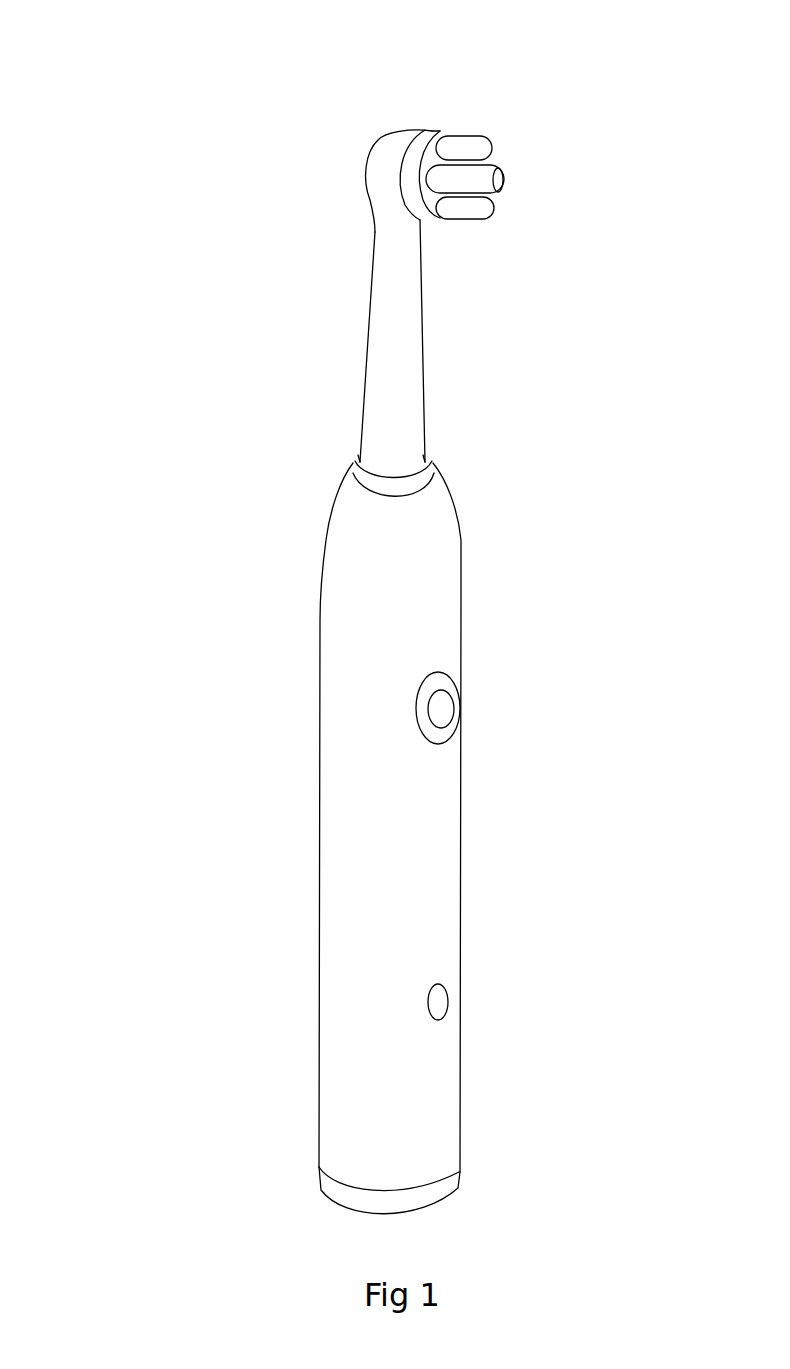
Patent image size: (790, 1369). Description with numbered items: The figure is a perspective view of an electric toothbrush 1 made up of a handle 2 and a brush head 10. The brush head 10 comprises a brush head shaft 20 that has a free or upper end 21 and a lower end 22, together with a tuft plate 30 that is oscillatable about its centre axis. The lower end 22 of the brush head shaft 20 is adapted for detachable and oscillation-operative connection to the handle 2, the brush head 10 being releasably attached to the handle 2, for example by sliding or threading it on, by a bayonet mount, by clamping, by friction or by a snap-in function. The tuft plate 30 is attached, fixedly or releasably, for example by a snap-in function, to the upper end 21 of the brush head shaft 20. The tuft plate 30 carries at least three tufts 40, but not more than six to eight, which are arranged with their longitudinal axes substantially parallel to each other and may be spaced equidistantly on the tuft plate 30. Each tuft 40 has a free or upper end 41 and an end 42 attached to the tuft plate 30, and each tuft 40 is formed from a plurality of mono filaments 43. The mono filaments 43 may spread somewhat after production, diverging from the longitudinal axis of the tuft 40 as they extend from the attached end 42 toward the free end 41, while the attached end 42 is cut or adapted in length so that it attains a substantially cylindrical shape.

The electric toothbrush 1 is at (170, 514).
The handle 2 is at (402, 850).
The brush head 10 is at (289, 291).
The brush head shaft 20 is at (448, 308).
The upper end of brush head shaft 21 is at (341, 170).
The lower end of brush head shaft 22 is at (338, 449).
The tuft plate 30 is at (432, 130).
The tufts 40 is at (497, 167).
The free end of tuft 41 is at (492, 236).
The attached end of tuft 42 is at (463, 116).
The mono filaments 43 is at (498, 180).